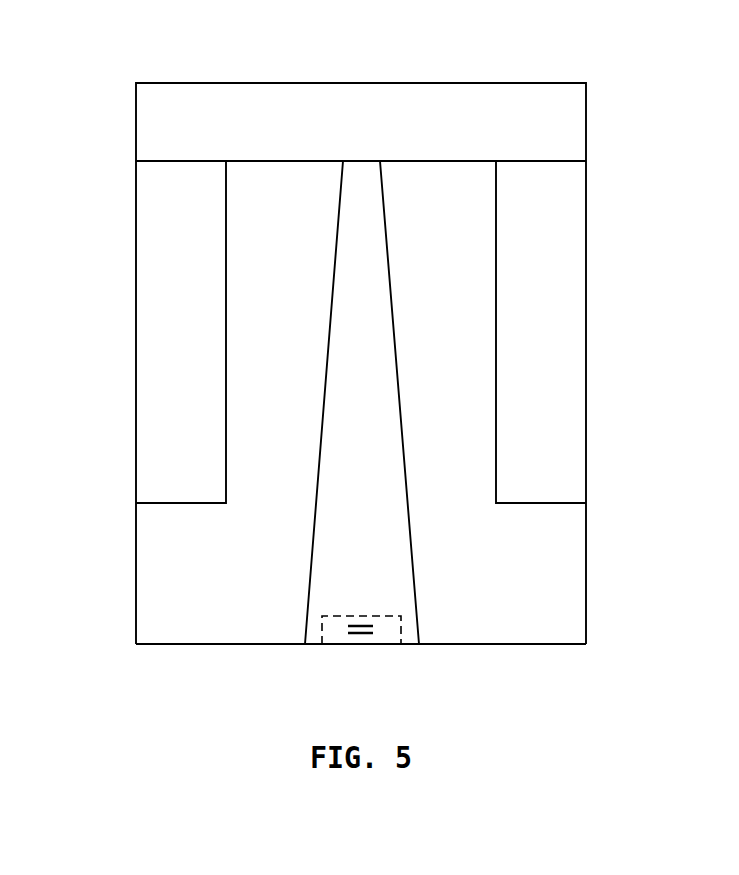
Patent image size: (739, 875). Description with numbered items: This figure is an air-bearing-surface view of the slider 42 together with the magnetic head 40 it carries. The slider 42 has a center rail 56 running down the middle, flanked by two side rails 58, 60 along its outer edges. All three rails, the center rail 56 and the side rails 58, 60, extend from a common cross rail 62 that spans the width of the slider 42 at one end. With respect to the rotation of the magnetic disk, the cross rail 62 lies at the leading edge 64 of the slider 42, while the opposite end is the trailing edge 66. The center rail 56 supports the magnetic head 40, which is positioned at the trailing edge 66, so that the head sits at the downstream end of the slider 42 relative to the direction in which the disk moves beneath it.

The magnetic head 40 is at (340, 637).
The slider 42 is at (128, 595).
The center rail 56 is at (347, 276).
The side rail 58 is at (153, 243).
The side rail 60 is at (568, 244).
The cross rail 62 is at (282, 95).
The leading edge 64 is at (461, 83).
The trailing edge 66 is at (484, 645).